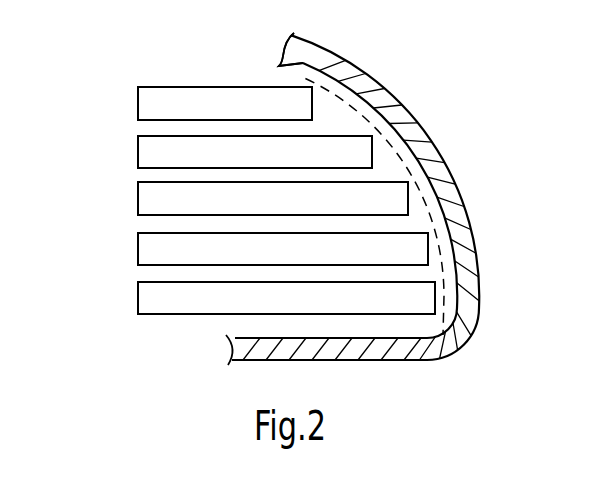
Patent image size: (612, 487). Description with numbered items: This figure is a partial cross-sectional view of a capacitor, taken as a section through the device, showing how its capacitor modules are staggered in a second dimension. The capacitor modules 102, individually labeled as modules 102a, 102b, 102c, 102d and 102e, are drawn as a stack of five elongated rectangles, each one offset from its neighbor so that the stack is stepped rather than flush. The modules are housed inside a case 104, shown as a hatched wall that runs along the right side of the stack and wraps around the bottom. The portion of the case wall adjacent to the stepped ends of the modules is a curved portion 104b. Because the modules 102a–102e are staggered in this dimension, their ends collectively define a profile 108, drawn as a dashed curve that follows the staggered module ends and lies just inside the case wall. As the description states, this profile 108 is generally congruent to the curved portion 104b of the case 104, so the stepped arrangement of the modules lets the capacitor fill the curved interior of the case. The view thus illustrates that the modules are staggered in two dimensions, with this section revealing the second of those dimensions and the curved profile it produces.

The capacitor modules 102 is at (123, 87).
The capacitor module 102a is at (225, 103).
The capacitor module 102b is at (255, 152).
The capacitor module 102c is at (273, 198).
The capacitor module 102d is at (283, 249).
The capacitor module 102e is at (286, 298).
The case 104 is at (411, 128).
The curved portion of case 104b is at (291, 72).
The profile 108 is at (445, 265).